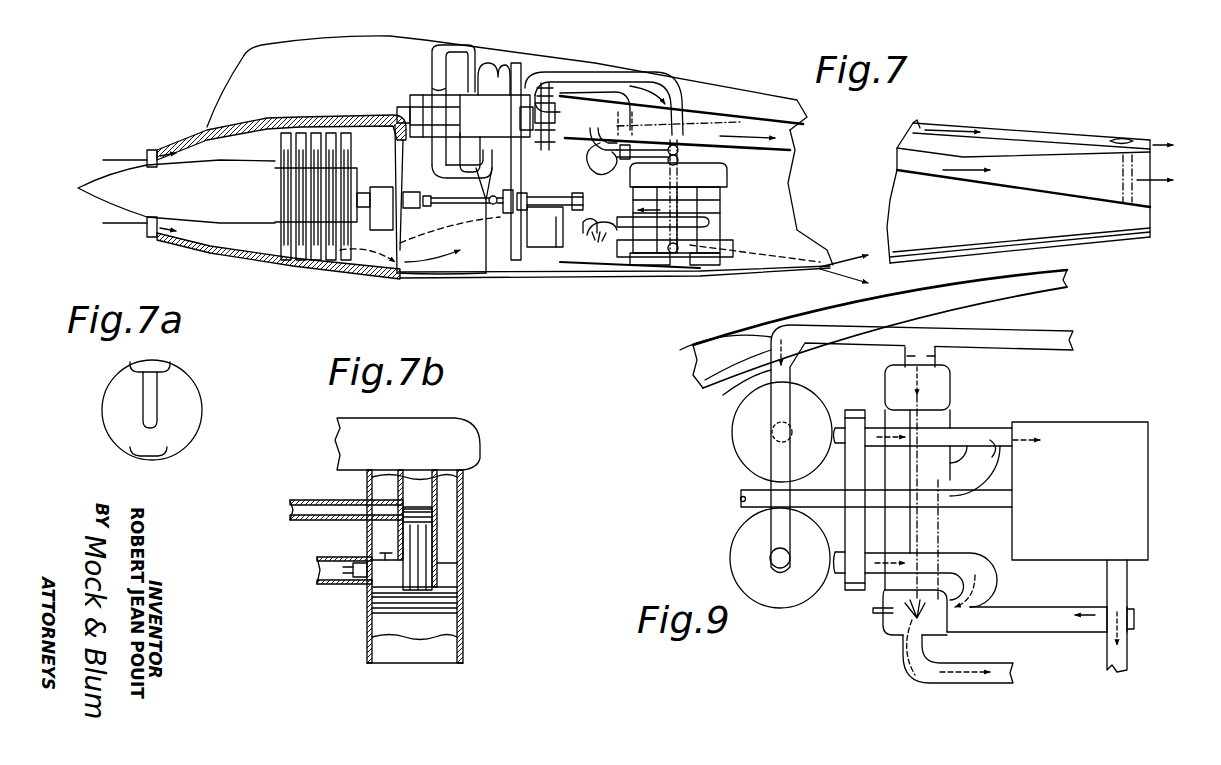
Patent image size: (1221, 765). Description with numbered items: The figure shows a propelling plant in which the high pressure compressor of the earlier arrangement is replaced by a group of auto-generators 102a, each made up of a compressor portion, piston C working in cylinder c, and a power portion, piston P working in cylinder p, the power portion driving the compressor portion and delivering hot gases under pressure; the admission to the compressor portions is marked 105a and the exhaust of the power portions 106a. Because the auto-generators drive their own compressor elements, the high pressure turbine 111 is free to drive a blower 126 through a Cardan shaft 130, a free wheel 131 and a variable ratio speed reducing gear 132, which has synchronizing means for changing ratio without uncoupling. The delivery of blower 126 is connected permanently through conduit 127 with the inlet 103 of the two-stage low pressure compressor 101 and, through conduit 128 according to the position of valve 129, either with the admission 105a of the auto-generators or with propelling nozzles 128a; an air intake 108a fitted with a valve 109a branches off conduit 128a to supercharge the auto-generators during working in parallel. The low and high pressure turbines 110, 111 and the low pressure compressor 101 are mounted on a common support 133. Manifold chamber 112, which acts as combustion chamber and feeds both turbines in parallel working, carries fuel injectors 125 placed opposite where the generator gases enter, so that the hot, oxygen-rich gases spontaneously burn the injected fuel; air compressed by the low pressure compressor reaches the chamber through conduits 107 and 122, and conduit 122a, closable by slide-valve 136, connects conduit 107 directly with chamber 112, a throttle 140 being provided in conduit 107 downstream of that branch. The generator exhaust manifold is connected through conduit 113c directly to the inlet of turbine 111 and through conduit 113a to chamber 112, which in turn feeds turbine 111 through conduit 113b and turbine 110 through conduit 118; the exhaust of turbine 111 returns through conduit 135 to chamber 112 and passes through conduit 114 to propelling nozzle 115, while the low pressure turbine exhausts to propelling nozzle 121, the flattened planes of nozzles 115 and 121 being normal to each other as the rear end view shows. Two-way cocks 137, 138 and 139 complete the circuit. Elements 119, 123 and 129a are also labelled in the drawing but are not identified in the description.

In FIG. 7, the low pressure compressor 101 is at (452, 93).
In FIG. 7, the auto-generator 102a is at (710, 213).
In FIG. 7B, the auto-generator 102a is at (457, 520).
In FIG. 9, the auto-generator 102a is at (745, 540).
In FIG. 7, the inlet of low pressure compressor 103 is at (473, 170).
In FIG. 7, the admission of auto-generators 105a is at (727, 247).
In FIG. 7B, the admission of auto-generators 105a is at (343, 577).
In FIG. 9, the admission of auto-generators 105a is at (760, 483).
In FIG. 7, the exhaust of auto-generator power portions 106a is at (657, 237).
In FIG. 7B, the exhaust of auto-generator power portions 106a is at (335, 510).
In FIG. 9, the exhaust of auto-generator power portions 106a is at (850, 522).
In FIG. 7, the conduit 107 is at (613, 70).
In FIG. 9, the conduit 107 is at (838, 315).
In FIG. 9, the air intake 108a is at (740, 392).
In FIG. 9, the valve 109a is at (703, 380).
In FIG. 7, the low pressure turbine 110 is at (542, 110).
In FIG. 7, the high pressure turbine 111 is at (537, 228).
In FIG. 9, the high pressure turbine 111 is at (1123, 433).
In FIG. 7, the manifold chamber 112 is at (507, 170).
In FIG. 9, the manifold chamber 112 is at (890, 633).
In FIG. 7, the conduit 113a is at (617, 271).
In FIG. 9, the conduit 113a is at (987, 583).
In FIG. 9, the conduit 113b is at (983, 473).
In FIG. 9, the conduit 113c is at (937, 427).
In FIG. 7, the conduit 114 is at (747, 120).
In FIG. 9, the conduit 114 is at (1127, 658).
In FIG. 7, the propelling nozzle 115 is at (1118, 137).
In FIG. 7A, the propelling nozzle 115 is at (130, 365).
In FIG. 7, the conduit 118 is at (590, 65).
In FIG. 9, the conduit 118 is at (987, 667).
In FIG. 7, the compressor 119 is at (502, 77).
In FIG. 7, the propelling nozzle 121 is at (1110, 188).
In FIG. 7A, the propelling nozzle 121 is at (147, 405).
In FIG. 7, the conduit 122 is at (640, 130).
In FIG. 9, the conduit 122a is at (950, 363).
In FIG. 7, the valve 123 is at (684, 155).
In FIG. 7, the fuel injector 125 is at (590, 240).
In FIG. 9, the fuel injector 125 is at (877, 617).
In FIG. 7, the blower 126 is at (302, 130).
In FIG. 7, the conduit 127 is at (480, 242).
In FIG. 7, the conduit 128 is at (547, 278).
In FIG. 7, the propelling nozzle 128a is at (1093, 242).
In FIG. 7A, the propelling nozzle 128a is at (140, 455).
In FIG. 9, the propelling nozzle 128a is at (680, 350).
In FIG. 7, the valve 129 is at (677, 267).
In FIG. 7, the lower cowl 129a is at (705, 273).
In FIG. 7, the Cardan shaft 130 is at (443, 203).
In FIG. 7, the free wheel 131 is at (413, 207).
In FIG. 7, the variable ratio speed reducing gear 132 is at (377, 223).
In FIG. 7, the common support 133 is at (525, 78).
In FIG. 9, the conduit 135 is at (1043, 620).
In FIG. 9, the closing slide-valve 136 is at (885, 357).
In FIG. 9, the two-way cock 137 is at (1000, 460).
In FIG. 9, the two-way cock 138 is at (1115, 635).
In FIG. 9, the two-way cock 139 is at (853, 588).
In FIG. 9, the throttle 140 is at (857, 333).
In FIG. 7B, the power piston P is at (413, 540).
In FIG. 7B, the power cylinder p is at (417, 512).
In FIG. 7B, the compressor cylinder c is at (443, 597).
In FIG. 7B, the compressor piston C is at (453, 583).